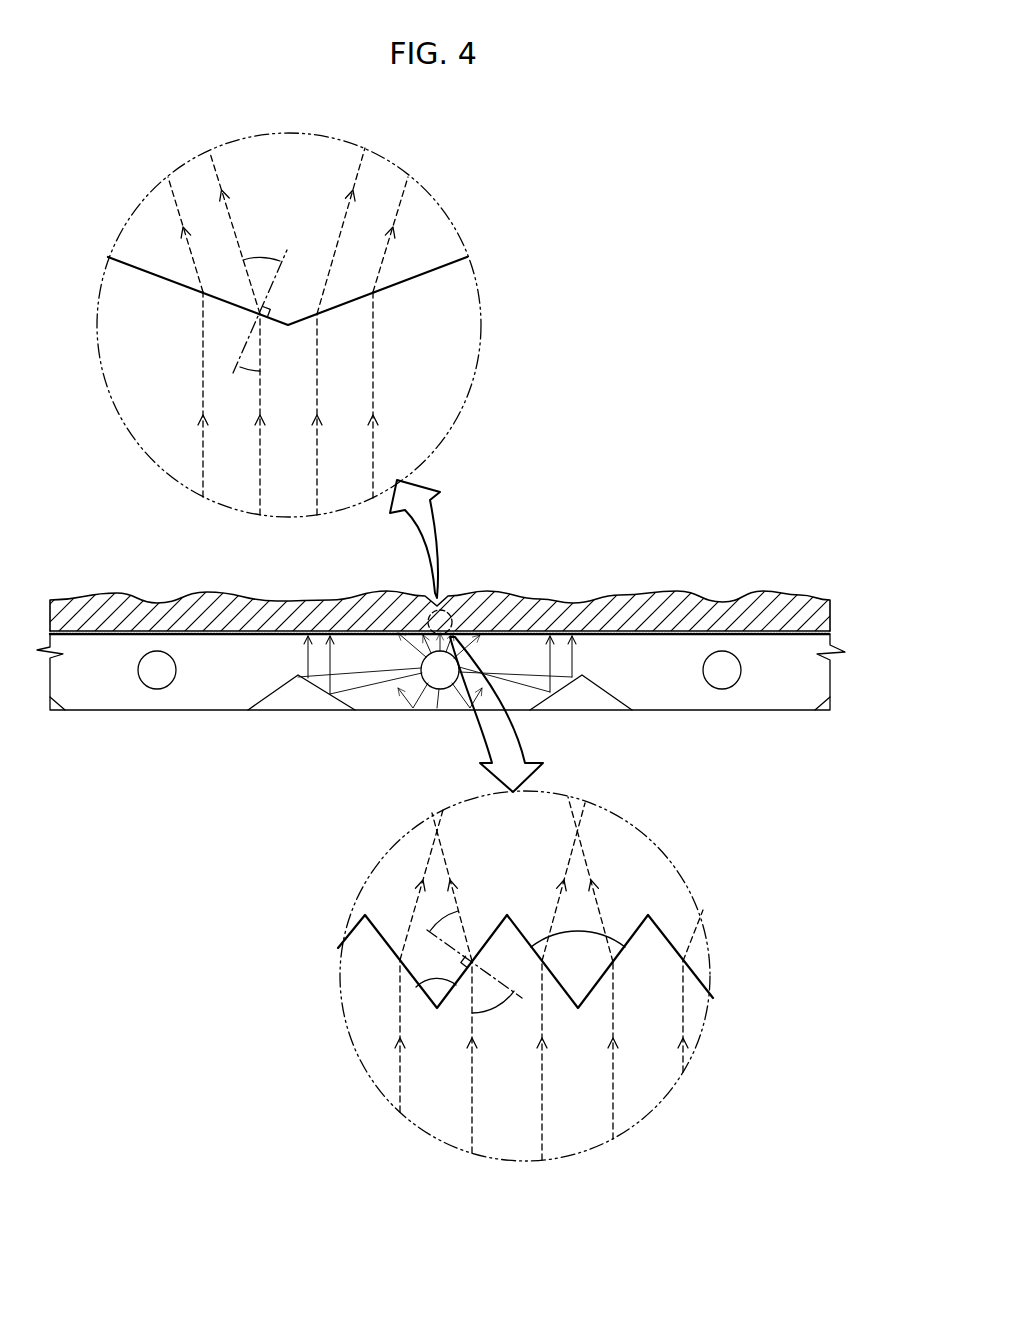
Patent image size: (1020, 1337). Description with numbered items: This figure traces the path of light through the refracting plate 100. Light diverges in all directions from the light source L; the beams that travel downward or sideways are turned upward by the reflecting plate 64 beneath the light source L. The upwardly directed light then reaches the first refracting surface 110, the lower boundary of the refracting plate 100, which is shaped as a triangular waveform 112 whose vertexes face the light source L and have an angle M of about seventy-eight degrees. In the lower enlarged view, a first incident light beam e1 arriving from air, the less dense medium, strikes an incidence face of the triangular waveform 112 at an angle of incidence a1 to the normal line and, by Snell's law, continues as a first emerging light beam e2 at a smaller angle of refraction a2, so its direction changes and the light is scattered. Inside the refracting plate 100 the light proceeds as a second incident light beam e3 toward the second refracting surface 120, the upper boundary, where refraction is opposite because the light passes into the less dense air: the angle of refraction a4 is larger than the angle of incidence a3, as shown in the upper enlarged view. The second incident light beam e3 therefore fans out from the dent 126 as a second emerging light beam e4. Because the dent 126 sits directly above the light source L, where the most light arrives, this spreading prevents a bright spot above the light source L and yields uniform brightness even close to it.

The refracting plate 100 is at (432, 646).
The first refracting surface 110 is at (92, 634).
The triangular waveform 112 is at (425, 988).
The second refracting surface 120 is at (100, 593).
The dent 126 is at (285, 313).
The reflecting plate 64 is at (612, 690).
The light source L is at (445, 687).
The first incident light beam e1 is at (472, 1127).
The first emerging light beam e2 is at (445, 855).
The second incident light beam e3 is at (258, 470).
The second emerging light beam e4 is at (213, 172).
The angle of incidence a1 is at (469, 981).
The angle of refraction a2 is at (439, 914).
The angle of incidence a3 is at (247, 381).
The angle of refraction a4 is at (260, 304).
The angle of the vertexes M is at (578, 929).